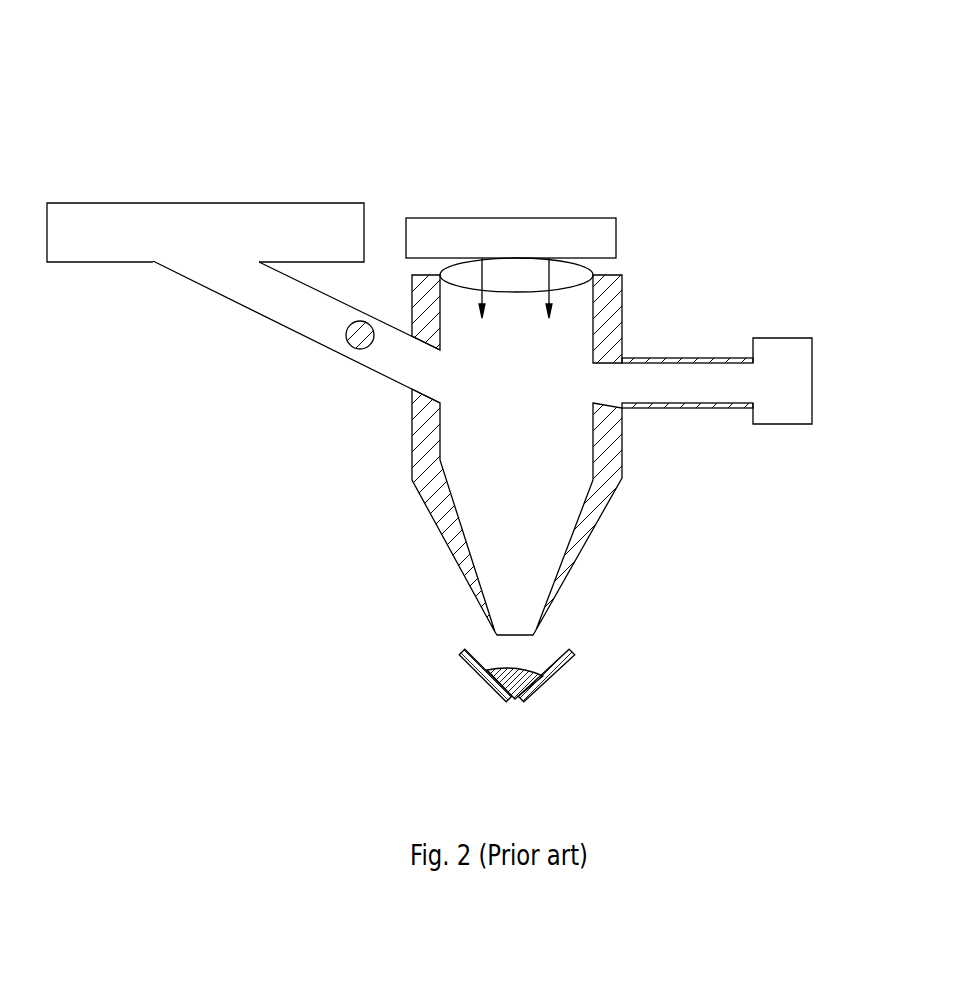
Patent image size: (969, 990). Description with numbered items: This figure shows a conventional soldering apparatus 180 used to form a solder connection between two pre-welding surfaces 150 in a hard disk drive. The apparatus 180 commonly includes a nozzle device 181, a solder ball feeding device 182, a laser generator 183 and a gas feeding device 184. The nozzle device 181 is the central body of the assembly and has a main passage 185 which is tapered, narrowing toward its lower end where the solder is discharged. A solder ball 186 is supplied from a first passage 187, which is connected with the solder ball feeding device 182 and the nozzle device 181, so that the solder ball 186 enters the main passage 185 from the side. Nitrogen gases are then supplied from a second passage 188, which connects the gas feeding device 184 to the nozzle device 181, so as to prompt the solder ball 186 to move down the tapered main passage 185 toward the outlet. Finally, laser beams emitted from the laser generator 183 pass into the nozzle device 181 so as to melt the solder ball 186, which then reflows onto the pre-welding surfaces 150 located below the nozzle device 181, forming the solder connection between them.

The conventional soldering apparatus 180 is at (152, 47).
The nozzle device 181 is at (446, 446).
The solder ball feeding device 182 is at (227, 227).
The laser generator 183 is at (513, 237).
The gas feeding device 184 is at (803, 377).
The main passage 185 is at (475, 440).
The solder ball 186 is at (358, 342).
The first passage 187 is at (300, 320).
The second passage 188 is at (670, 378).
The pre-welding surfaces 150 is at (492, 683).